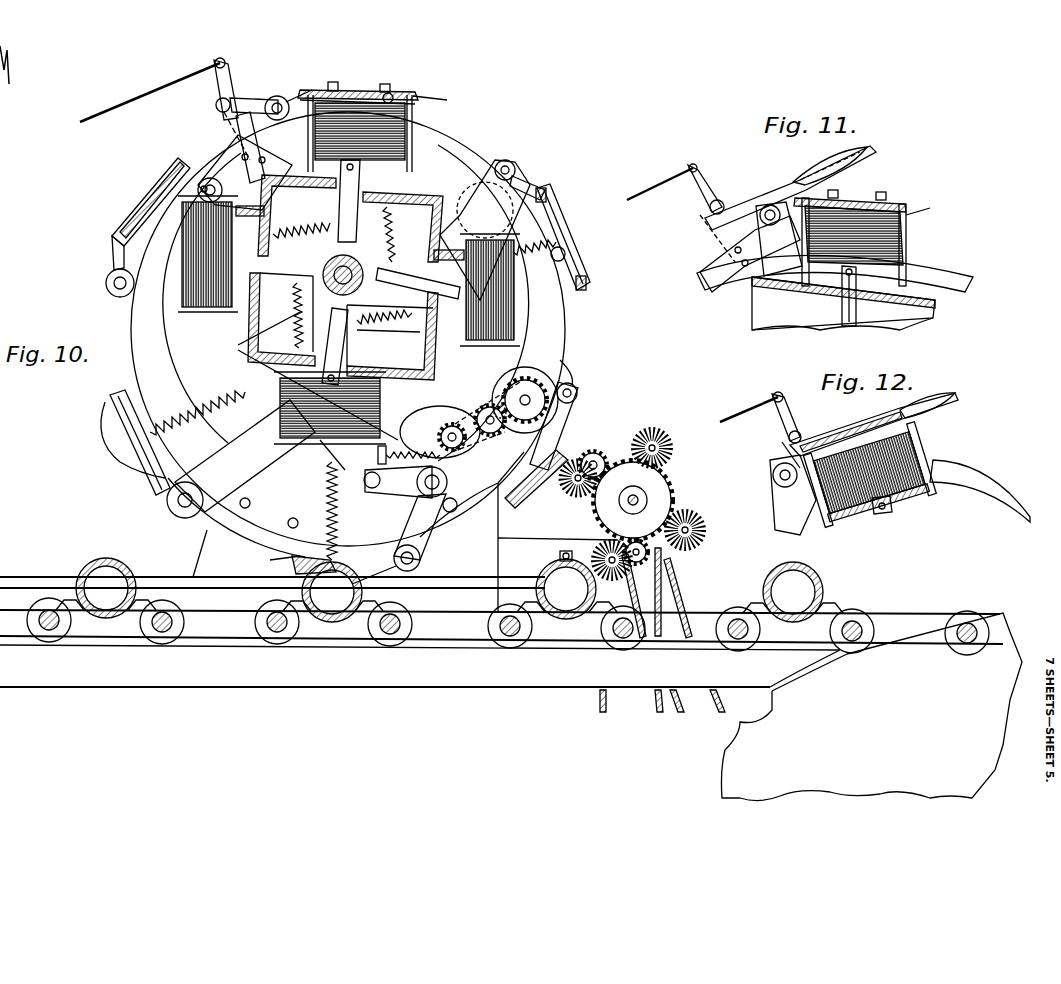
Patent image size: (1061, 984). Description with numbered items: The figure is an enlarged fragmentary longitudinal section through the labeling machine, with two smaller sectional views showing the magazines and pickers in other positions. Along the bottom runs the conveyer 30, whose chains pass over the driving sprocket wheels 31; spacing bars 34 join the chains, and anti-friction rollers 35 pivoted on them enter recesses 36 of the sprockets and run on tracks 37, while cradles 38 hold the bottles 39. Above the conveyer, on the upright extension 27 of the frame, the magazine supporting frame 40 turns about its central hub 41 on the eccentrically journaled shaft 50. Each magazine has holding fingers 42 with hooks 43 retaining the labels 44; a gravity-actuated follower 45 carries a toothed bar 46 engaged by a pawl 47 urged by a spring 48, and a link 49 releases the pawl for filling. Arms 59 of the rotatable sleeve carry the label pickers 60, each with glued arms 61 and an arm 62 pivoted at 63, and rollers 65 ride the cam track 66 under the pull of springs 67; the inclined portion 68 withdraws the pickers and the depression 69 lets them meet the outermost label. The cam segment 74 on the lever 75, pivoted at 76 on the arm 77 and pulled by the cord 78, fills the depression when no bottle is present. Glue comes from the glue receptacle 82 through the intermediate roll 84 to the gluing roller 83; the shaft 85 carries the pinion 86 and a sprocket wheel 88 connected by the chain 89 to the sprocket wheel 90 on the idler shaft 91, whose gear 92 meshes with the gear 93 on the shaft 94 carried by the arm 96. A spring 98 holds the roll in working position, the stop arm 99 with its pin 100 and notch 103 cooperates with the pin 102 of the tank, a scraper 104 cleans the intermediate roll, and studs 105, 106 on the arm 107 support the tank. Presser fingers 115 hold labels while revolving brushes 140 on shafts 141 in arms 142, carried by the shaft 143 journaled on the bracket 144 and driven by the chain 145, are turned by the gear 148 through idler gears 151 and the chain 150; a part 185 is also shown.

In FIG. 10, the upright extension 27 is at (246, 553).
In FIG. 10, the conveyer 30 is at (501, 627).
In FIG. 10, the driving sprocket wheels 31 is at (871, 707).
In FIG. 10, the spacing bars 34 is at (162, 644).
In FIG. 10, the anti-friction rollers 35 is at (276, 646).
In FIG. 10, the recesses 36 is at (775, 712).
In FIG. 10, the tracks 37 is at (423, 668).
In FIG. 10, the cradles 38 is at (108, 630).
In FIG. 10, the bottles 39 is at (116, 568).
In FIG. 10, the magazine supporting frame 40 is at (400, 362).
In FIG. 11, the magazine supporting frame 40 is at (843, 303).
In FIG. 10, the central hub 41 is at (352, 262).
In FIG. 10, the holding fingers 42 is at (200, 320).
In FIG. 11, the holding fingers 42 is at (906, 240).
In FIG. 10, the hooks 43 is at (140, 308).
In FIG. 10, the labels 44 is at (184, 250).
In FIG. 12, the labels 44 is at (900, 498).
In FIG. 10, the gravity-actuated follower 45 is at (286, 312).
In FIG. 11, the gravity-actuated follower 45 is at (861, 296).
In FIG. 12, the gravity-actuated follower 45 is at (866, 512).
In FIG. 10, the toothed bar 46 is at (380, 292).
In FIG. 11, the toothed bar 46 is at (850, 324).
In FIG. 10, the pawl 47 is at (388, 339).
In FIG. 10, the spring 48 is at (282, 330).
In FIG. 10, the link 49 is at (300, 168).
In FIG. 10, the shaft 50 is at (328, 286).
In FIG. 10, the arms 59 is at (338, 339).
In FIG. 11, the arms 59 is at (779, 239).
In FIG. 12, the arms 59 is at (793, 495).
In FIG. 10, the label pickers 60 is at (160, 180).
In FIG. 10, the arms 61 is at (568, 196).
In FIG. 10, the arm 62 is at (112, 258).
In FIG. 10, the pivot 63 is at (106, 286).
In FIG. 10, the rollers 65 is at (158, 420).
In FIG. 10, the cam track 66 is at (162, 322).
In FIG. 11, the cam track 66 is at (835, 273).
In FIG. 12, the cam track 66 is at (1021, 499).
In FIG. 10, the springs 67 is at (222, 398).
In FIG. 10, the inclined portion 68 is at (425, 112).
In FIG. 11, the inclined portion 68 is at (912, 222).
In FIG. 12, the inclined portion 68 is at (986, 466).
In FIG. 10, the depression 69 is at (345, 90).
In FIG. 11, the depression 69 is at (855, 200).
In FIG. 12, the depression 69 is at (928, 462).
In FIG. 10, the cam segment 74 is at (392, 92).
In FIG. 11, the cam segment 74 is at (862, 152).
In FIG. 12, the cam segment 74 is at (942, 398).
In FIG. 10, the lever 75 is at (230, 72).
In FIG. 11, the lever 75 is at (764, 190).
In FIG. 12, the lever 75 is at (780, 422).
In FIG. 10, the pivot 76 is at (216, 106).
In FIG. 11, the pivot 76 is at (710, 210).
In FIG. 10, the arm 77 is at (232, 128).
In FIG. 11, the arm 77 is at (724, 236).
In FIG. 12, the arm 77 is at (786, 452).
In FIG. 10, the cord 78 is at (148, 98).
In FIG. 11, the cord 78 is at (662, 182).
In FIG. 10, the glue receptacle 82 is at (499, 429).
In FIG. 10, the gluing roller 83 is at (545, 360).
In FIG. 10, the intermediate roll 84 is at (438, 425).
In FIG. 10, the shaft 85 is at (440, 402).
In FIG. 10, the pinion 86 is at (476, 384).
In FIG. 10, the sprocket wheel 88 is at (444, 482).
In FIG. 10, the chain 89 is at (572, 363).
In FIG. 10, the sprocket wheel 90 is at (558, 405).
In FIG. 10, the idler shaft 91 is at (524, 387).
In FIG. 10, the gear 92 is at (489, 396).
In FIG. 10, the gear 93 is at (578, 392).
In FIG. 10, the shaft 94 is at (575, 383).
In FIG. 10, the arm 96 is at (489, 547).
In FIG. 10, the spring 98 is at (398, 482).
In FIG. 10, the stop arm 99 is at (558, 496).
In FIG. 10, the pin 100 is at (459, 510).
In FIG. 10, the pin 102 is at (536, 479).
In FIG. 10, the notch 103 is at (591, 455).
In FIG. 10, the scraper 104 is at (408, 456).
In FIG. 10, the stud 105 is at (399, 539).
In FIG. 10, the stud 106 is at (328, 496).
In FIG. 10, the arm 107 is at (335, 452).
In FIG. 10, the presser fingers 115 is at (237, 517).
In FIG. 10, the revolving brushes 140 is at (692, 494).
In FIG. 10, the shafts 141 is at (702, 530).
In FIG. 10, the arms 142 is at (560, 556).
In FIG. 10, the shaft 143 is at (654, 432).
In FIG. 10, the bracket 144 is at (596, 535).
In FIG. 10, the chain 145 is at (684, 580).
In FIG. 10, the gear 148 is at (593, 453).
In FIG. 10, the chain 150 is at (606, 708).
In FIG. 10, the idler gears 151 is at (676, 562).
In FIG. 10, the upper rail 185 is at (46, 578).